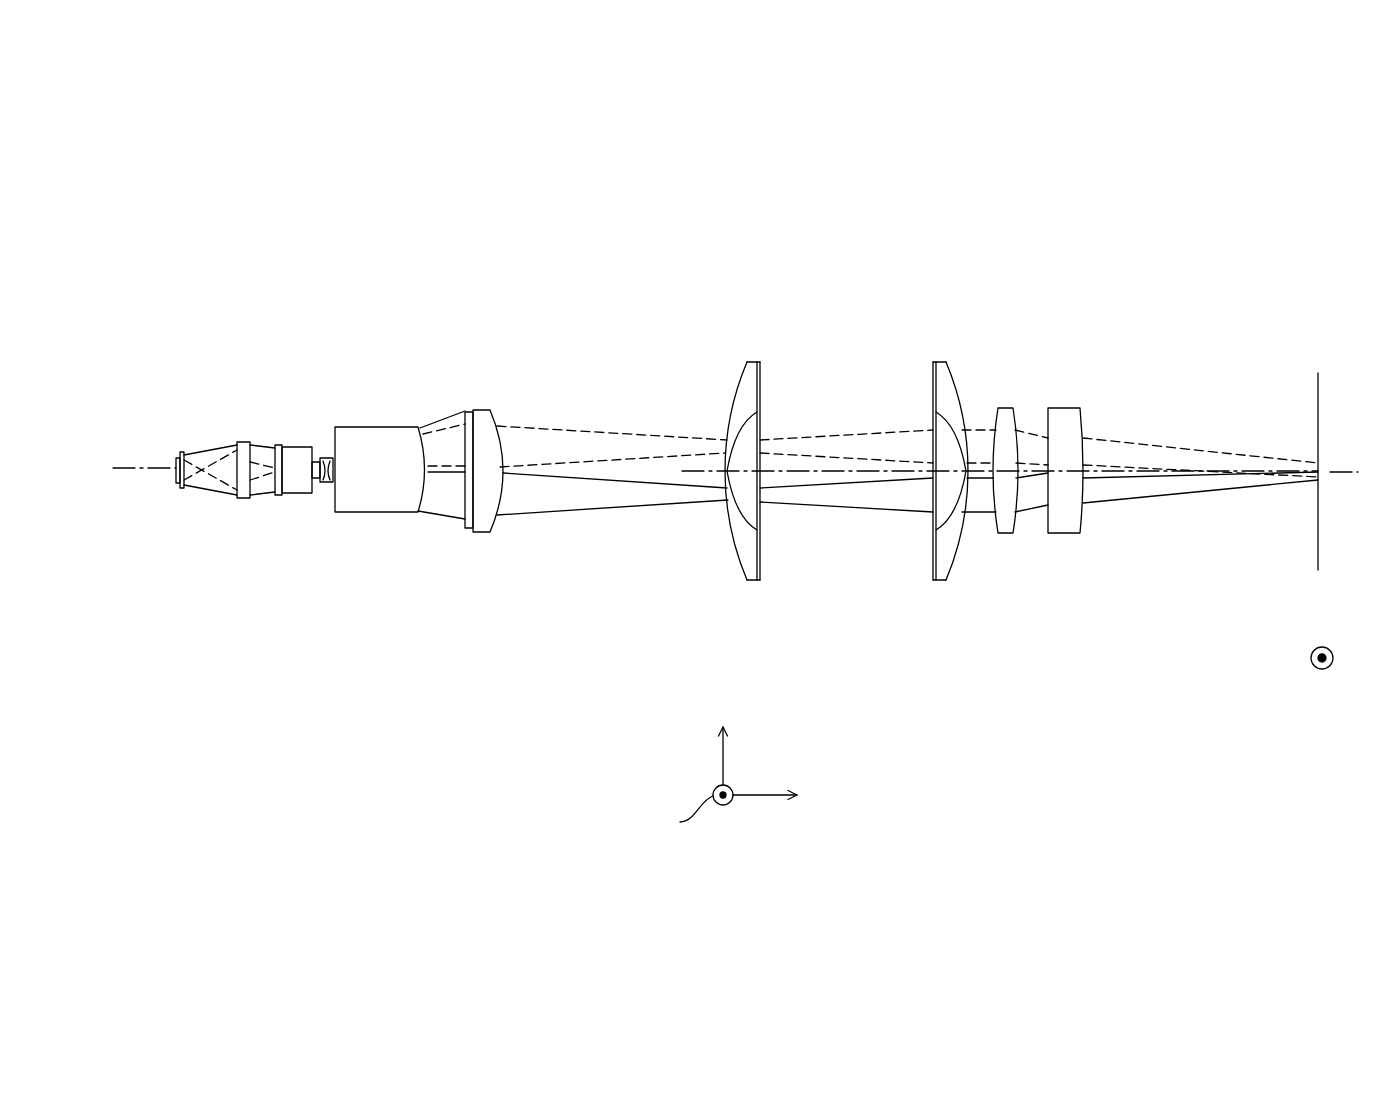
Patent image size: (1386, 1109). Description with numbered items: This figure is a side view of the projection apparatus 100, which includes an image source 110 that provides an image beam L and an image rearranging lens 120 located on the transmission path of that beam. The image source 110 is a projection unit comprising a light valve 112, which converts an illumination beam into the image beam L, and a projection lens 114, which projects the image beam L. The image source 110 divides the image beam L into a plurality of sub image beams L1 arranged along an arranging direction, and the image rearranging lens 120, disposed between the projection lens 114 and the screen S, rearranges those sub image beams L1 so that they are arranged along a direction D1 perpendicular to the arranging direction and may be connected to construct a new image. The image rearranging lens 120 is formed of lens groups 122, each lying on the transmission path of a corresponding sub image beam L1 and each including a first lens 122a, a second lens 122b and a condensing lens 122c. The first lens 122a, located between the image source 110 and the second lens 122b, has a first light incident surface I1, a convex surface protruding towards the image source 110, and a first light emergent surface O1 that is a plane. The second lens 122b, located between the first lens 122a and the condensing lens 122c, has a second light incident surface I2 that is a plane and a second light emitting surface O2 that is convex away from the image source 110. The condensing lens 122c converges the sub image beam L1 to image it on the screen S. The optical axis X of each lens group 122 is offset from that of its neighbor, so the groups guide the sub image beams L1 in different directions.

The projection apparatus 100 is at (1360, 775).
The image source 110 is at (350, 352).
The light valve 112 is at (180, 452).
The projection lens 114 is at (481, 409).
The image rearranging lens 120 is at (952, 200).
The lens group 122 is at (1042, 275).
The first lens 122a is at (782, 473).
The second lens 122b is at (920, 473).
The condensing lens 122c is at (1006, 408).
The first light incident surface I1 is at (738, 386).
The first light emergent surface O1 is at (762, 405).
The second light incident surface I2 is at (931, 388).
The second light emitting surface O2 is at (953, 377).
The image beam L is at (590, 348).
The sub image beam L1 is at (520, 426).
The screen S is at (1320, 393).
The optical axis X is at (1338, 475).
The direction D1 is at (1318, 669).